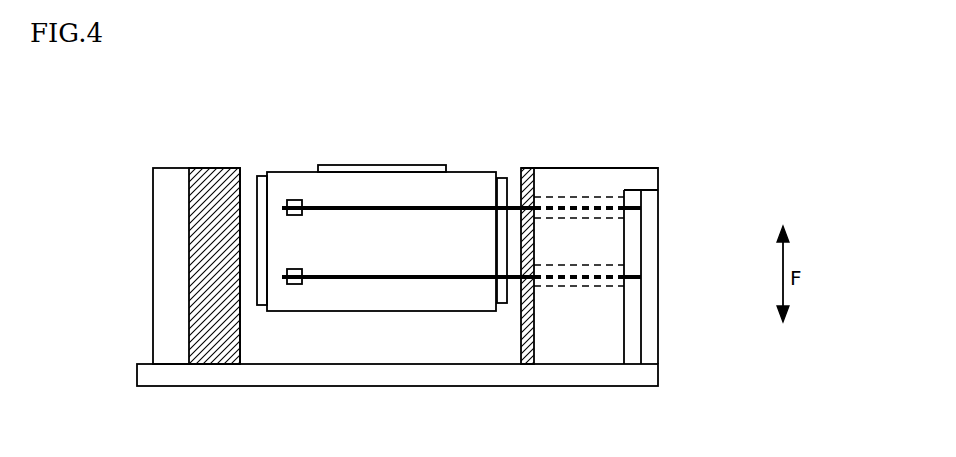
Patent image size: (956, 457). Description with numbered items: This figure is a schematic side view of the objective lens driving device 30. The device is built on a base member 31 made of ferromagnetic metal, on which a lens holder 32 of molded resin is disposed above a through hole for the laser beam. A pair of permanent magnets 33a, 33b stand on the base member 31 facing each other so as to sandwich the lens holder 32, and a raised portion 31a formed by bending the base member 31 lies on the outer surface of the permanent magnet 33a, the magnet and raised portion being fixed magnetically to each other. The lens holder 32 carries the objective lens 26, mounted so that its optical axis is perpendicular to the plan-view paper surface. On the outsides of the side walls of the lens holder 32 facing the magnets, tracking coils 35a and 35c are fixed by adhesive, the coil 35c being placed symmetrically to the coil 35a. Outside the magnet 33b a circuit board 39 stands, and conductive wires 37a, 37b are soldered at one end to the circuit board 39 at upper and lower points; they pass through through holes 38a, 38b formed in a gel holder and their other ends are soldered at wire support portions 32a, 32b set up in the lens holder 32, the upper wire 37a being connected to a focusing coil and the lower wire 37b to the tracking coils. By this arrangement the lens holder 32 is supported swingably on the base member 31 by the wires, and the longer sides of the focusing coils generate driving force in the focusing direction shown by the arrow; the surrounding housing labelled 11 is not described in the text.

The objective lens driving device 30 is at (618, 83).
The base member 31 is at (191, 378).
The raised portion 31a is at (166, 291).
The permanent magnet 33a is at (206, 219).
The tracking coil 35a is at (257, 178).
The lens holder 32 is at (306, 186).
The objective lens 26 is at (376, 165).
The tracking coil 35c is at (498, 178).
The permanent magnet 33b is at (526, 168).
The housing 11 is at (656, 174).
The through hole 38a is at (572, 196).
The through hole 38b is at (560, 288).
The wire 37a is at (414, 210).
The wire 37b is at (389, 279).
The wire support portion 32a is at (300, 216).
The wire support portion 32b is at (298, 288).
The circuit board 39 is at (658, 330).